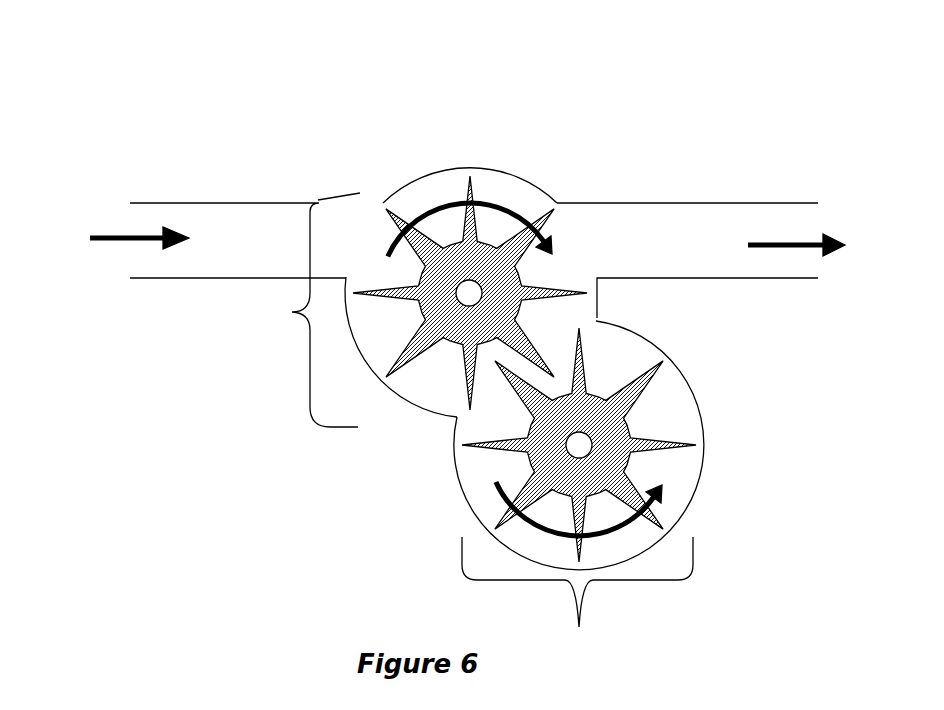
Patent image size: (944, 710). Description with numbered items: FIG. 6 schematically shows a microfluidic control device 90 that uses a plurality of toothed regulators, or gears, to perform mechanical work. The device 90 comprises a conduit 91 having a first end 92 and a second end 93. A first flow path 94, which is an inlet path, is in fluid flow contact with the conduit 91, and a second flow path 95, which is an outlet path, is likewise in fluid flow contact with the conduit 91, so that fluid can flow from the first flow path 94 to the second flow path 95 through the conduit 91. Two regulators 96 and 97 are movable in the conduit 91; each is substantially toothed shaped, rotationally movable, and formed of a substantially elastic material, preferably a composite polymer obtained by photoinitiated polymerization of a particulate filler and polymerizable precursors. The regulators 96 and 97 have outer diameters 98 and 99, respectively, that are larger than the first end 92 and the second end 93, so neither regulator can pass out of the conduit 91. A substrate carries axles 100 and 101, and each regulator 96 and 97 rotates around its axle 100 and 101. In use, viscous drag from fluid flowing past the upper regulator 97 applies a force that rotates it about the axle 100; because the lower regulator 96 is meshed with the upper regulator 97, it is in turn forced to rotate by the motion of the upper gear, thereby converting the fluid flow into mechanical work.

The device 90 is at (277, 73).
The conduit 91 is at (495, 193).
The first end 92 is at (377, 210).
The second end 93 is at (575, 213).
The first flow path 94 is at (117, 238).
The second flow path 95 is at (775, 245).
The regulator 96 is at (428, 348).
The regulator 97 is at (620, 452).
The outer diameter 98 is at (579, 491).
The outer diameter 99 is at (292, 312).
The axle 100 is at (478, 293).
The axle 101 is at (585, 444).